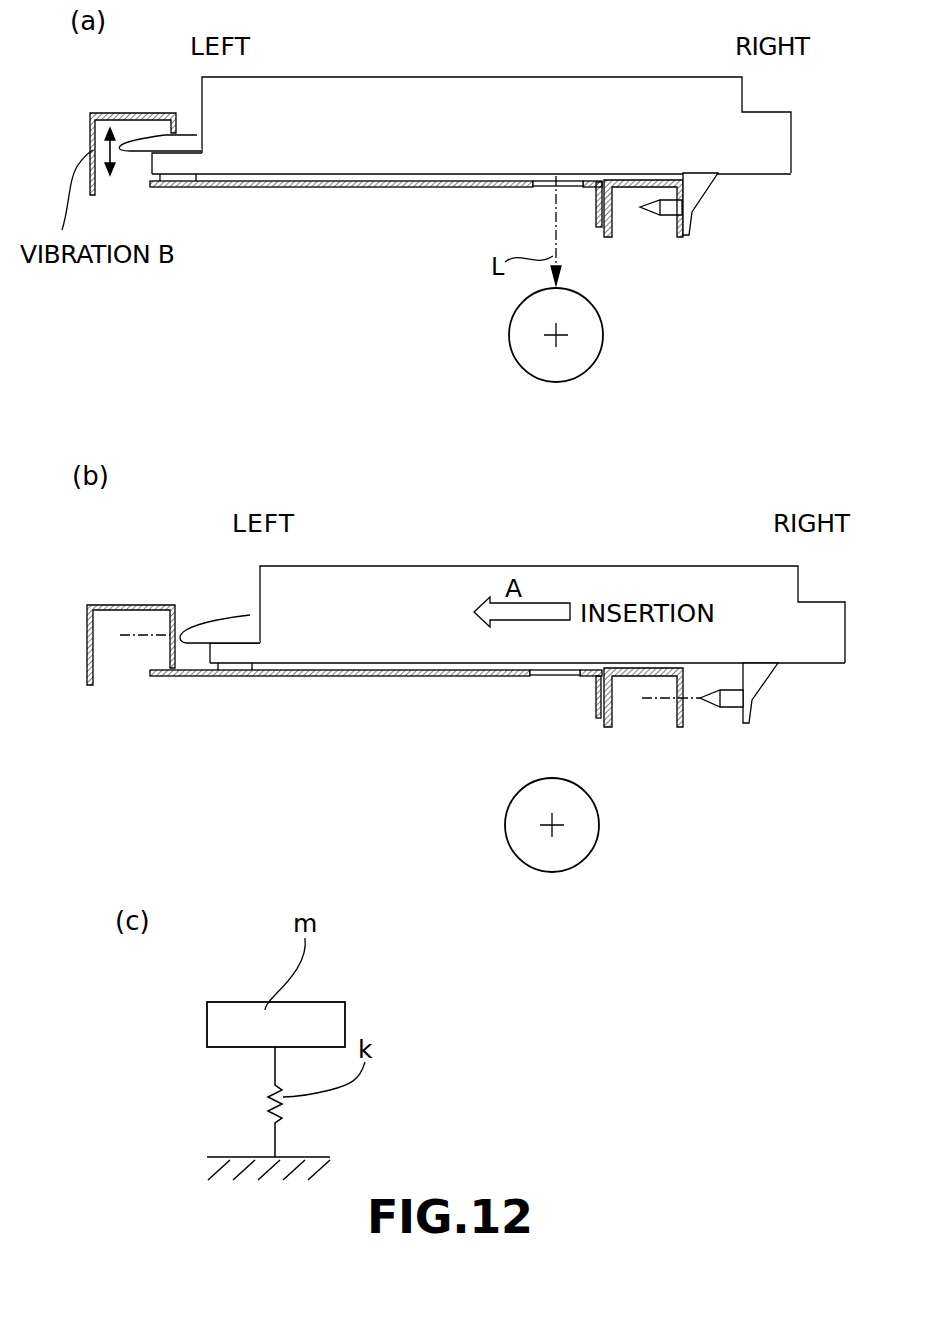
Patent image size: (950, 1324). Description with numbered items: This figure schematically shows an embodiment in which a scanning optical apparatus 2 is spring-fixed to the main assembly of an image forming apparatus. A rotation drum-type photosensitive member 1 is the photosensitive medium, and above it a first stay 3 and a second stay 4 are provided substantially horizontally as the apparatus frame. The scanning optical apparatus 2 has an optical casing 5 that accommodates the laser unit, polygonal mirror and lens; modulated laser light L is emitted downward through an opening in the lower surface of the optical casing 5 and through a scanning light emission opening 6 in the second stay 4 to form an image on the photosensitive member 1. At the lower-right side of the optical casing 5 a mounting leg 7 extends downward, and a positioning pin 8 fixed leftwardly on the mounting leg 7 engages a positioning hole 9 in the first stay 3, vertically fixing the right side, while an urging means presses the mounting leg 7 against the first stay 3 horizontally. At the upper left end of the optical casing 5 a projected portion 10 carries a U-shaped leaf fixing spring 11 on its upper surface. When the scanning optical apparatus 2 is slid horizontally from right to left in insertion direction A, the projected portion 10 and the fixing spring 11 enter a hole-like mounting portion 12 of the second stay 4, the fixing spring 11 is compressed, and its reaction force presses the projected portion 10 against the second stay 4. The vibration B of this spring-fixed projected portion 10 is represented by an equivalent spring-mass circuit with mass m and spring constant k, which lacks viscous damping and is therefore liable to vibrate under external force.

The photosensitive member 1 is at (605, 337).
The scanning optical apparatus 2 is at (557, 70).
The first stay 3 is at (620, 190).
The second stay 4 is at (352, 190).
The optical casing 5 is at (398, 90).
The scanning light emission opening 6 is at (540, 188).
The mounting leg 7 is at (697, 185).
The positioning pin 8 is at (668, 208).
The positioning hole 9 is at (678, 218).
The projected portion 10 is at (177, 165).
The fixing spring 11 is at (140, 137).
The hole-like mounting portion 12 is at (180, 133).